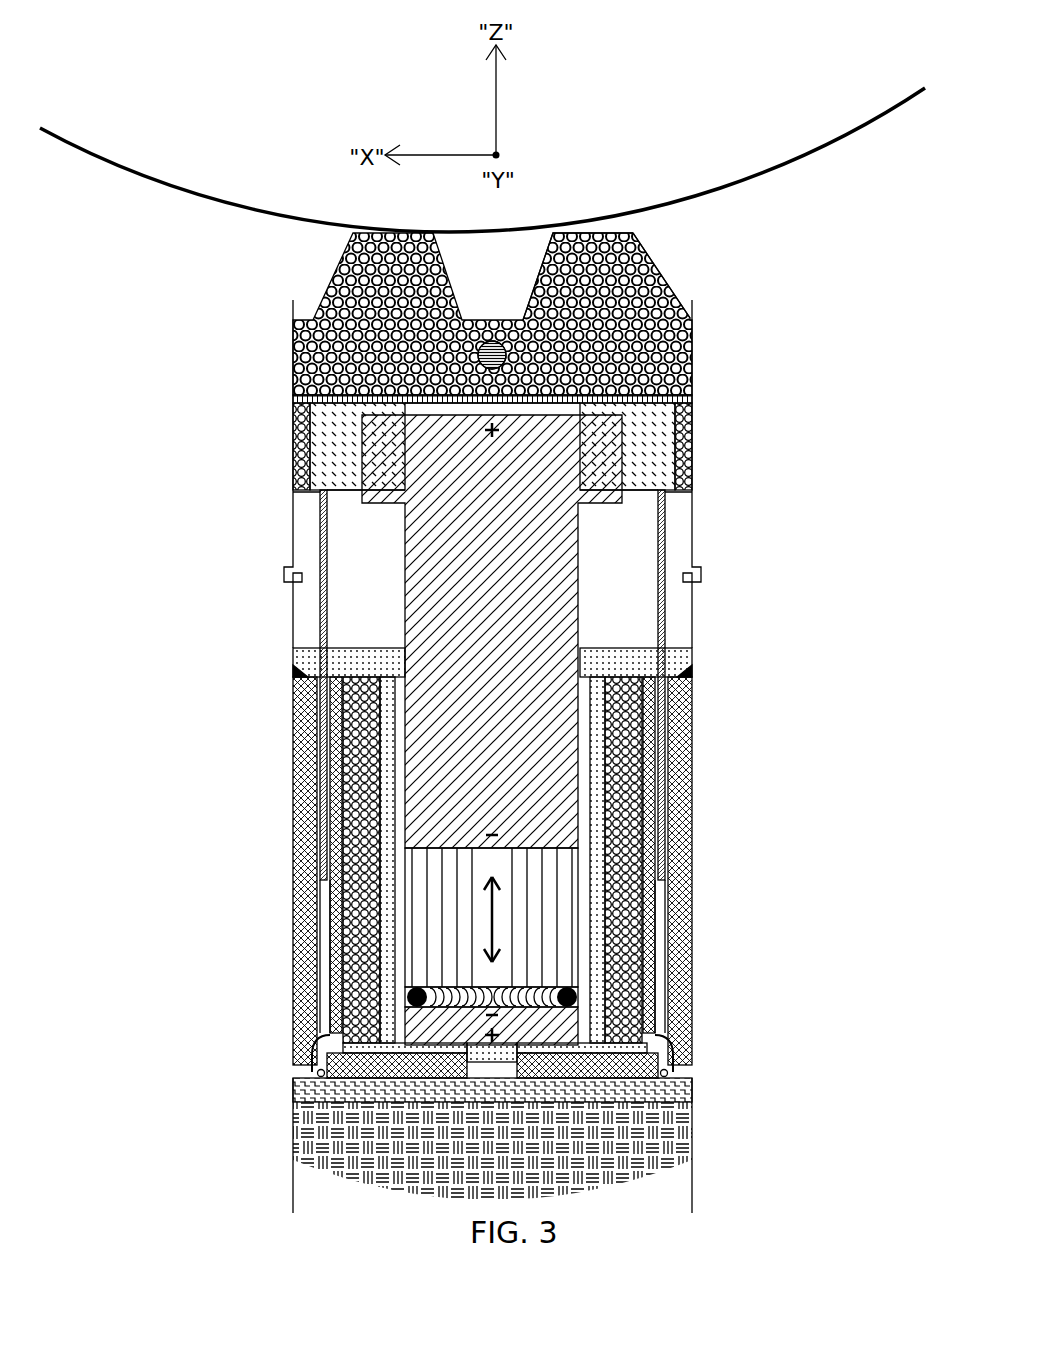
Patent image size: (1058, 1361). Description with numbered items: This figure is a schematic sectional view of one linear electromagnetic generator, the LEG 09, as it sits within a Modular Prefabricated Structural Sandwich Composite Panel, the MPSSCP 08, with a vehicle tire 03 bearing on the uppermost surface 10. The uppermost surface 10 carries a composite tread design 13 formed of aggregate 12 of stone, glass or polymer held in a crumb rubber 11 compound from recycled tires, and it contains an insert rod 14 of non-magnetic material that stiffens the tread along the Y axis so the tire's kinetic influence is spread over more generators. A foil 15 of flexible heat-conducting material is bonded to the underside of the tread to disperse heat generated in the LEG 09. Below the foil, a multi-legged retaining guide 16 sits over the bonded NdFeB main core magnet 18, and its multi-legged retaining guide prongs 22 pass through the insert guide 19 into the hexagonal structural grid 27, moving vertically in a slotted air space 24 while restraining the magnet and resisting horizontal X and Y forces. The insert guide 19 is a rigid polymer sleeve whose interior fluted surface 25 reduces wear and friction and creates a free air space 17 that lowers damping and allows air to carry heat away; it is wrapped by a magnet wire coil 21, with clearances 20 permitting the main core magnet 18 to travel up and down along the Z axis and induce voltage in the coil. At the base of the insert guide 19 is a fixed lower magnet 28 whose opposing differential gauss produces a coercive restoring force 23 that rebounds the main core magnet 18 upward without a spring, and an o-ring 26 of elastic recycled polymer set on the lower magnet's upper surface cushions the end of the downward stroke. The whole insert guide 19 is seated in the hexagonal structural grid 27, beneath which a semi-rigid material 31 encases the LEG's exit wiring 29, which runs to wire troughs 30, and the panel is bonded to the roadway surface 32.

The vehicle tire 03 is at (538, 220).
The uppermost surface 10 is at (607, 222).
The crumb rubber 11 is at (632, 242).
The aggregate 12 is at (637, 262).
The composite tread design 13 is at (290, 395).
The insert rod 14 is at (513, 347).
The foil 15 is at (552, 392).
The multi-legged retaining guide 16 is at (657, 430).
The free air space 17 is at (565, 407).
The main core magnet 18 is at (553, 598).
The insert guide 19 is at (627, 660).
The clearances 20 is at (592, 710).
The magnet wire coil 21 is at (630, 750).
The multi-legged retaining guide prongs 22 is at (667, 898).
The coercive restoring force 23 is at (500, 917).
The slotted air space 24 is at (677, 863).
The interior fluted surface 25 is at (580, 983).
The o-ring 26 is at (573, 1028).
The hexagonal structural grid 27 is at (694, 987).
The lower magnet 28 is at (632, 1027).
The exit wiring 29 is at (672, 1070).
The wire trough 30 is at (695, 1078).
The semi-rigid material 31 is at (637, 1095).
The roadway surface 32 is at (557, 1137).
The MPSSCP 08 is at (345, 232).
The linear electromagnetic generator 09 is at (290, 1078).